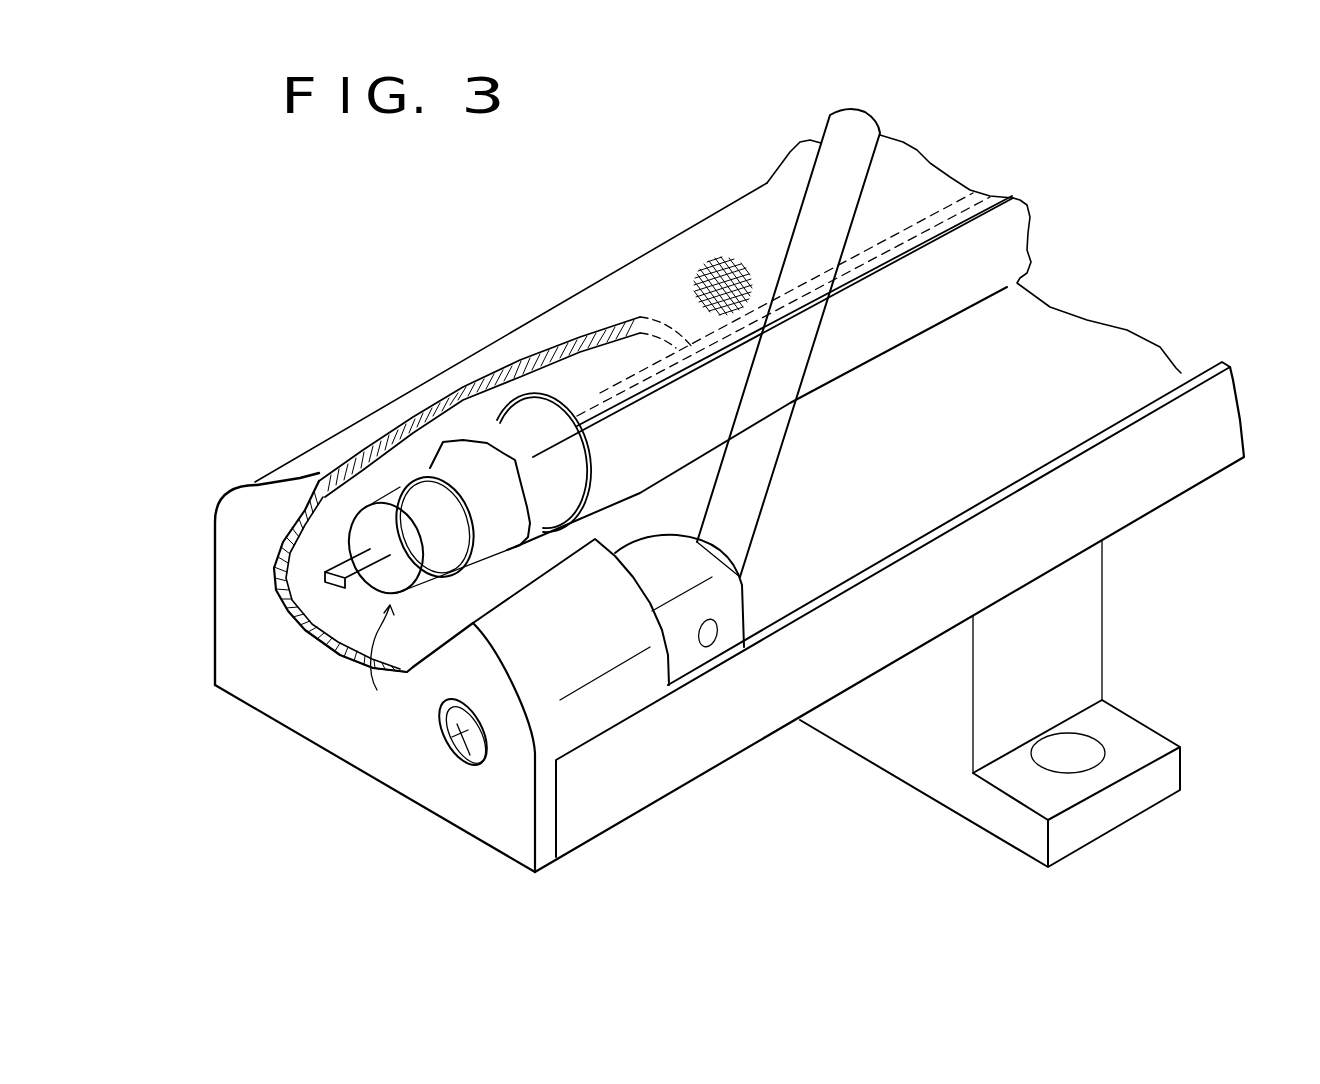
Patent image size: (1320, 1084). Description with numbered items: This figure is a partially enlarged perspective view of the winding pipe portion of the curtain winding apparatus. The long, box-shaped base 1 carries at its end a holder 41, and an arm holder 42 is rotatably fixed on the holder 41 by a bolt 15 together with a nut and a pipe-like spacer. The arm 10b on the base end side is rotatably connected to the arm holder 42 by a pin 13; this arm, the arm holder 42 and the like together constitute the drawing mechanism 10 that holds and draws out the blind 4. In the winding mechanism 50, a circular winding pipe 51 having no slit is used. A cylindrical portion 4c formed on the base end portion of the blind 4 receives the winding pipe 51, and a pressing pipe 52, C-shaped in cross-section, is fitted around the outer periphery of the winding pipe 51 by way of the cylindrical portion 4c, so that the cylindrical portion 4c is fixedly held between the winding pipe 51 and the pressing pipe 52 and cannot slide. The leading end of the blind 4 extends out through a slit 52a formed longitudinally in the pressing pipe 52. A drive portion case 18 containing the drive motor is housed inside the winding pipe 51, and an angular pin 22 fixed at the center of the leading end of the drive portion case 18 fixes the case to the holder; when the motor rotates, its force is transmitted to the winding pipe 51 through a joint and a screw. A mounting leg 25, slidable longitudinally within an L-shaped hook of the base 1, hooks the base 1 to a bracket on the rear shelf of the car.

The base 1 is at (587, 840).
The blind 4 is at (767, 183).
The cylindrical portion 4c is at (458, 438).
The drawing mechanism 10 is at (781, 500).
The arm 10b is at (782, 420).
The pin 13 is at (710, 640).
The bolt 15 is at (477, 760).
The drive portion case 18 is at (340, 495).
The angular pin 22 is at (317, 642).
The mounting leg 25 is at (1167, 733).
The holder 41 is at (403, 797).
The arm holder 42 is at (683, 648).
The winding mechanism 50 is at (340, 585).
The winding pipe 51 is at (417, 462).
The pressing pipe 52 is at (907, 340).
The slit 52a is at (900, 258).